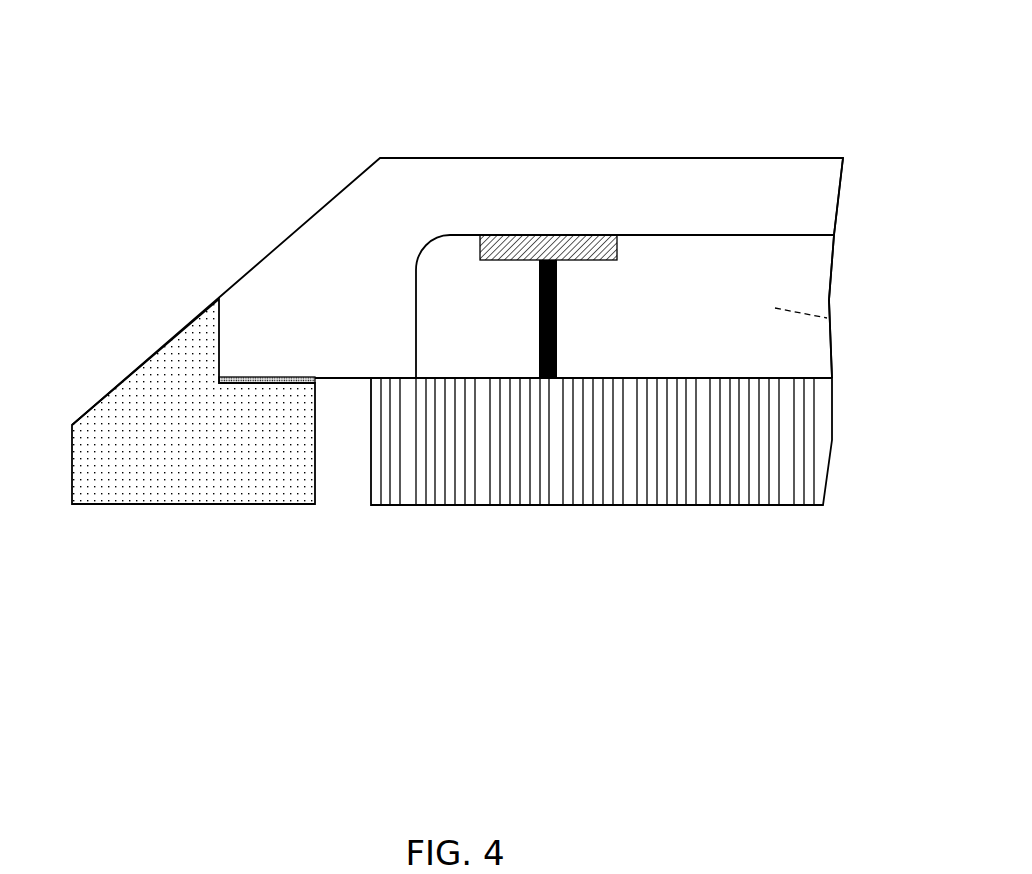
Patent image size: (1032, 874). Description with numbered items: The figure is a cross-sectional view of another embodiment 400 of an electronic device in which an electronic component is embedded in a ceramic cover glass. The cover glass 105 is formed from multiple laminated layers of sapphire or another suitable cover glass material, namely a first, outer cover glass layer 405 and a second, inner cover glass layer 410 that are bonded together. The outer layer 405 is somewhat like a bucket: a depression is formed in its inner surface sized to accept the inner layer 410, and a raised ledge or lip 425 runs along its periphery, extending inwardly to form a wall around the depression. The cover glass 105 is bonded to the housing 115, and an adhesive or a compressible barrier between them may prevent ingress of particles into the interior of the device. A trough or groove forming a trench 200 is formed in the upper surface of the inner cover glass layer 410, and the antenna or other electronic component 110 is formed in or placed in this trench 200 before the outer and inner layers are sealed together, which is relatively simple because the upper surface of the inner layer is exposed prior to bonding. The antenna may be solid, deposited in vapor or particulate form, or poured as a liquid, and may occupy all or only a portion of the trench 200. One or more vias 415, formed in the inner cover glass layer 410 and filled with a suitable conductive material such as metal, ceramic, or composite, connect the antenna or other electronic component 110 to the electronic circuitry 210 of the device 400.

The embodiment 400 is at (355, 27).
The cover glass 105 is at (722, 157).
The antenna or other electronic component 110 is at (517, 235).
The housing 115 is at (125, 380).
The trench 200 is at (480, 257).
The electronic circuitry 210 is at (517, 505).
The first cover glass layer 405 is at (765, 190).
The second cover glass layer 410 is at (830, 313).
The via 415 is at (557, 317).
The raised ledge or lip 425 is at (353, 380).